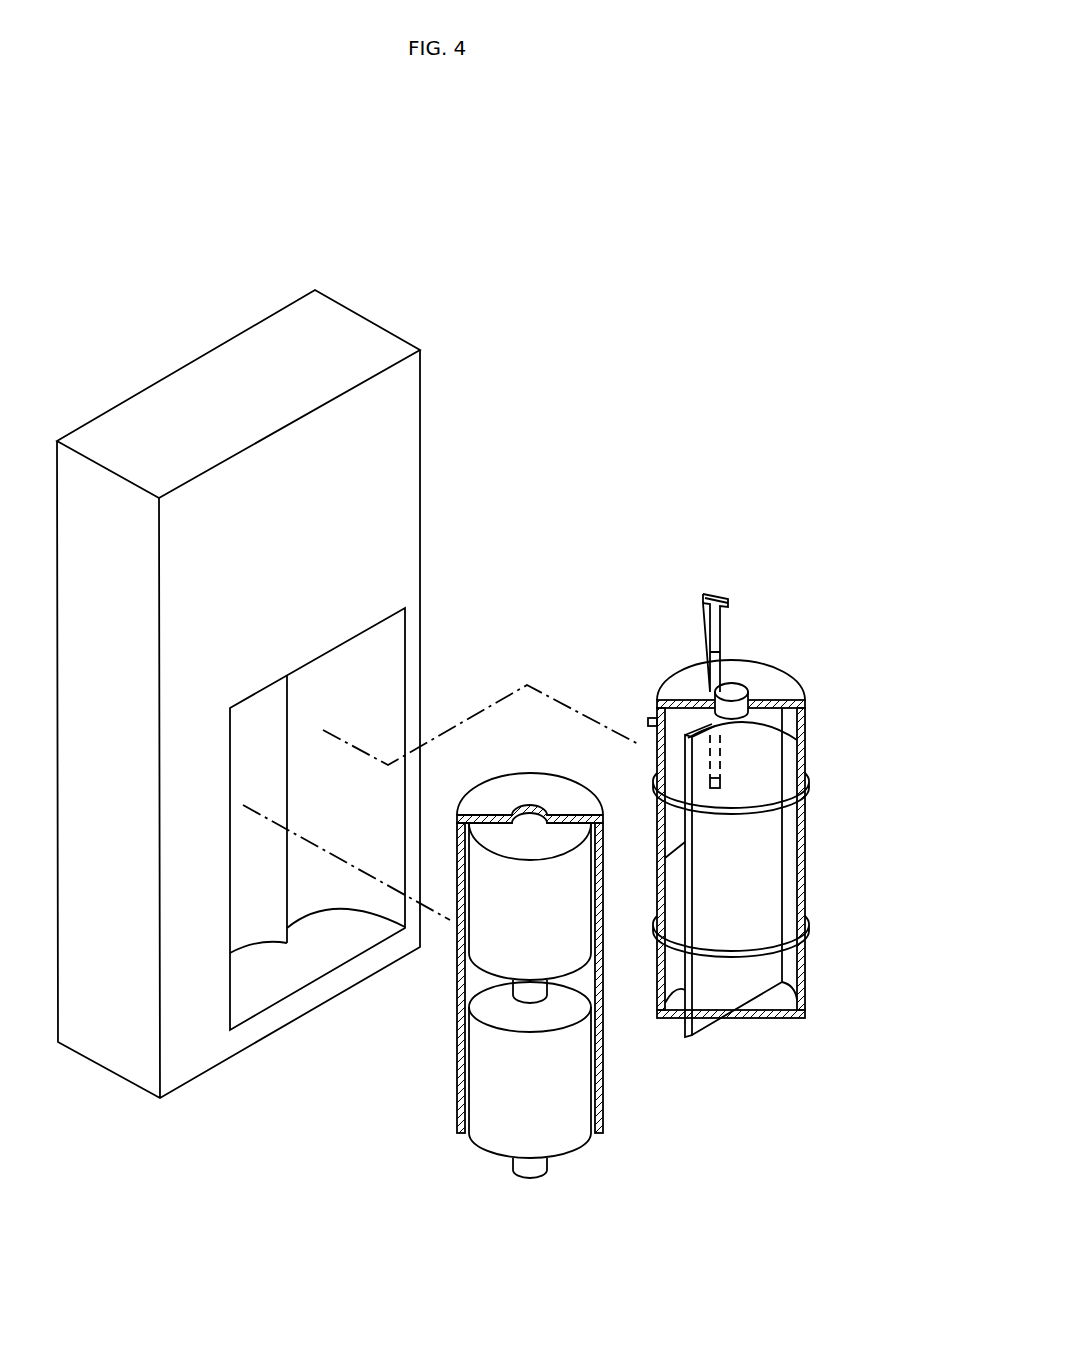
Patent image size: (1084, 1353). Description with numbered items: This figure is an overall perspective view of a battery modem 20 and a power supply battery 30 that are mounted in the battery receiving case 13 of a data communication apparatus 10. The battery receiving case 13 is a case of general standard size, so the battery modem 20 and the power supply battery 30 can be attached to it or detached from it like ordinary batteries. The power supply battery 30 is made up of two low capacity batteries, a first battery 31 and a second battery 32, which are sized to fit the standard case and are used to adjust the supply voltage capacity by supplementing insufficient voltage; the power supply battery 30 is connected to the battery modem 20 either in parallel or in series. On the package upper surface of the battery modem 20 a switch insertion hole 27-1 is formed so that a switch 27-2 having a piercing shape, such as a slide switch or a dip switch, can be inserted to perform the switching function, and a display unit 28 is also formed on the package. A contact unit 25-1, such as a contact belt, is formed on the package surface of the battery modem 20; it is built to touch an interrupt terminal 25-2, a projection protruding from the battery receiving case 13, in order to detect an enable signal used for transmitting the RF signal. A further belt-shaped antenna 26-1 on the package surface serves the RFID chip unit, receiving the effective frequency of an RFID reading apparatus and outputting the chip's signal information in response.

The data communication apparatus 10 is at (393, 323).
The battery receiving case 13 is at (275, 986).
The interrupt terminal 25-2 is at (392, 668).
The battery modem 20 is at (781, 656).
The switch insertion hole 27-1 is at (808, 724).
The switch 27-2 is at (712, 595).
The display unit 28 is at (650, 722).
The contact unit 25-1 is at (806, 797).
The antenna 26-1 is at (806, 940).
The power supply battery 30 is at (609, 1089).
The first battery 31 is at (493, 947).
The second battery 32 is at (500, 1110).